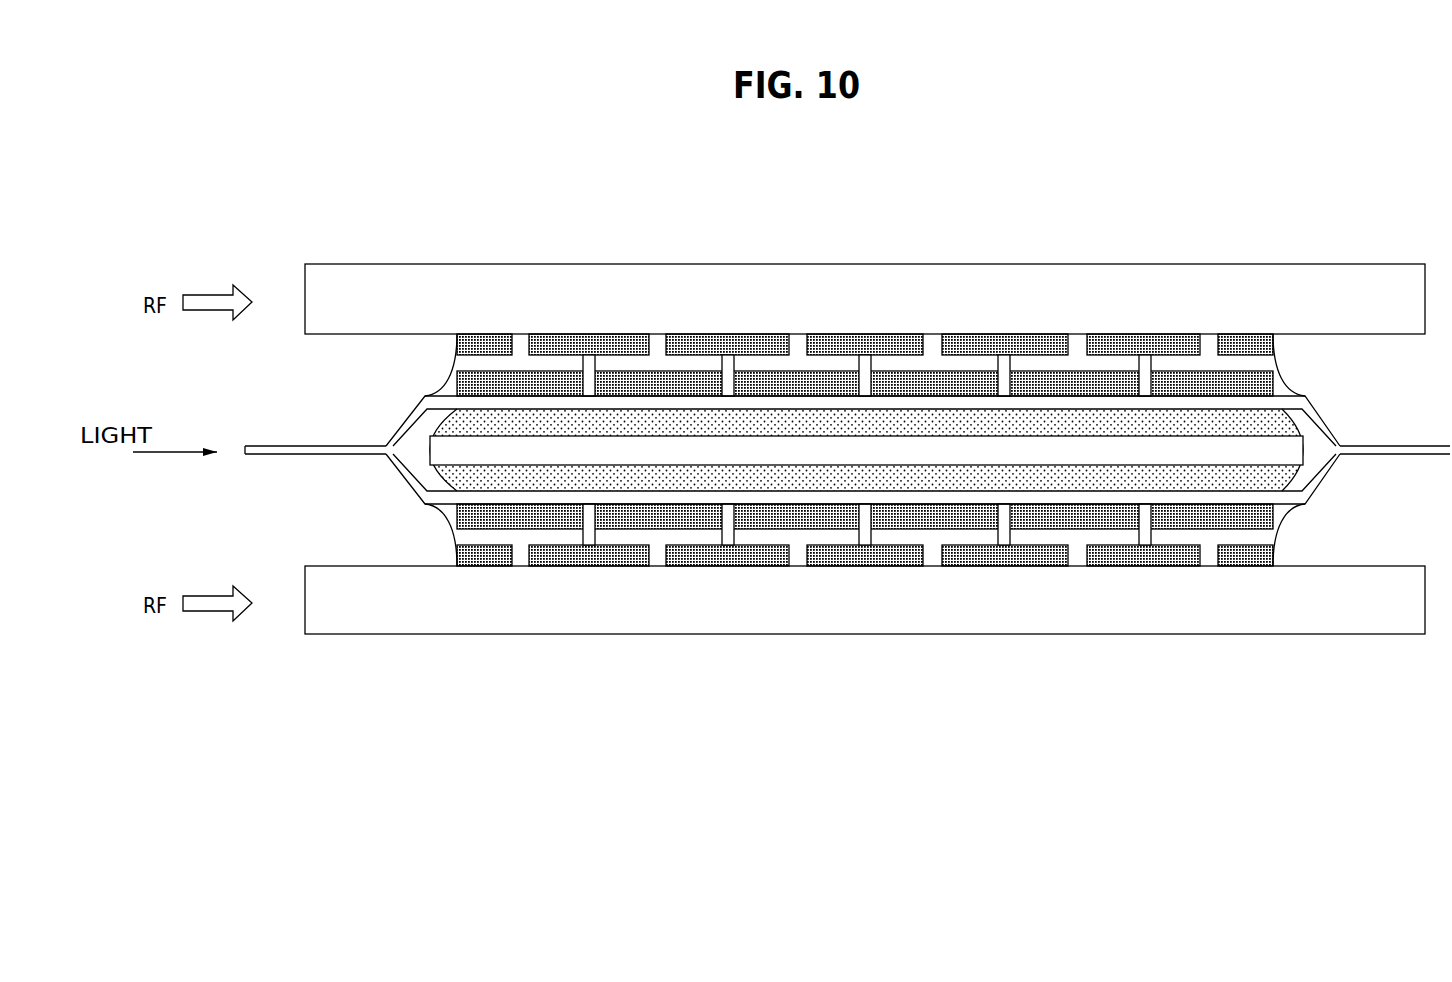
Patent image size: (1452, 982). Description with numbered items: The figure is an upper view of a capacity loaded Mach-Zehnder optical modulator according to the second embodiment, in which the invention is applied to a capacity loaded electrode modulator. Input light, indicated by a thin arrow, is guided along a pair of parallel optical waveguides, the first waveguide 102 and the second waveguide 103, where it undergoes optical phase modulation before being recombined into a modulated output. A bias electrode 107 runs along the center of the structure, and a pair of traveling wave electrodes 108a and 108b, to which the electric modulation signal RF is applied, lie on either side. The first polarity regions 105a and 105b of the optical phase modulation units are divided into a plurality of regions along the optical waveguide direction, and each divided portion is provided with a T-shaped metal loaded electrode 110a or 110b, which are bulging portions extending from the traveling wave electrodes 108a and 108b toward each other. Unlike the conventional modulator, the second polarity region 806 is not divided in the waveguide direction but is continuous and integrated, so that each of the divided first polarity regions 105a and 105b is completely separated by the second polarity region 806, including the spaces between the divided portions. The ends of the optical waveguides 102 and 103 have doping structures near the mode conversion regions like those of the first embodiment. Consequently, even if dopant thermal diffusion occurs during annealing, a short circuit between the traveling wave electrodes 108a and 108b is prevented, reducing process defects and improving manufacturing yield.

The first waveguide 102 is at (1210, 407).
The second waveguide 103 is at (1178, 490).
The first polarity region 105a is at (763, 392).
The first polarity region 105b is at (832, 515).
The bias electrode 107 is at (1068, 445).
The traveling wave electrode 108a is at (983, 297).
The traveling wave electrode 108b is at (955, 595).
The loaded electrode 110a is at (565, 363).
The loaded electrode 110b is at (563, 543).
The second polarity region 806 is at (892, 480).